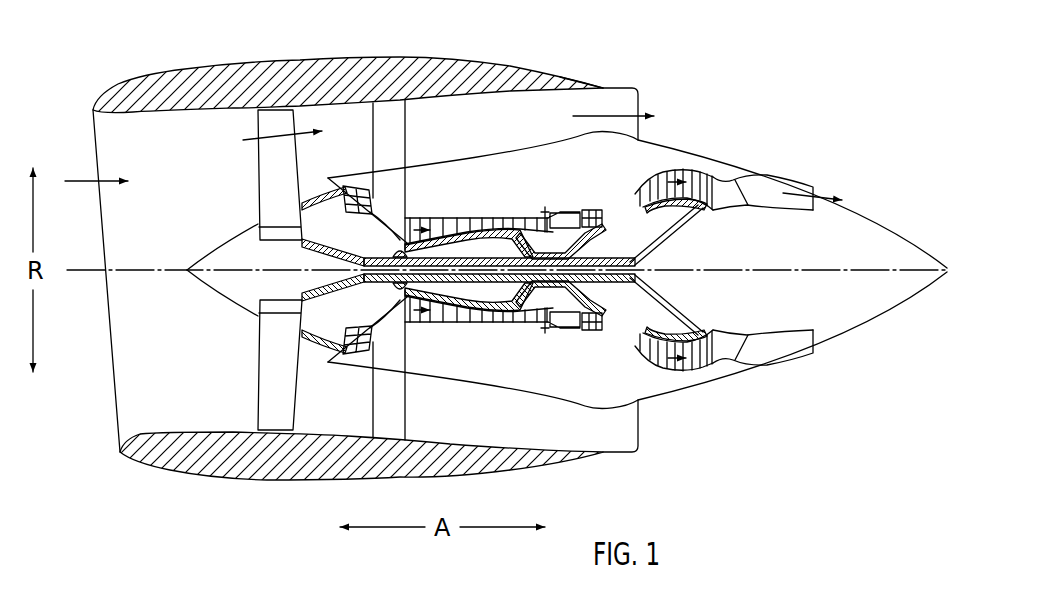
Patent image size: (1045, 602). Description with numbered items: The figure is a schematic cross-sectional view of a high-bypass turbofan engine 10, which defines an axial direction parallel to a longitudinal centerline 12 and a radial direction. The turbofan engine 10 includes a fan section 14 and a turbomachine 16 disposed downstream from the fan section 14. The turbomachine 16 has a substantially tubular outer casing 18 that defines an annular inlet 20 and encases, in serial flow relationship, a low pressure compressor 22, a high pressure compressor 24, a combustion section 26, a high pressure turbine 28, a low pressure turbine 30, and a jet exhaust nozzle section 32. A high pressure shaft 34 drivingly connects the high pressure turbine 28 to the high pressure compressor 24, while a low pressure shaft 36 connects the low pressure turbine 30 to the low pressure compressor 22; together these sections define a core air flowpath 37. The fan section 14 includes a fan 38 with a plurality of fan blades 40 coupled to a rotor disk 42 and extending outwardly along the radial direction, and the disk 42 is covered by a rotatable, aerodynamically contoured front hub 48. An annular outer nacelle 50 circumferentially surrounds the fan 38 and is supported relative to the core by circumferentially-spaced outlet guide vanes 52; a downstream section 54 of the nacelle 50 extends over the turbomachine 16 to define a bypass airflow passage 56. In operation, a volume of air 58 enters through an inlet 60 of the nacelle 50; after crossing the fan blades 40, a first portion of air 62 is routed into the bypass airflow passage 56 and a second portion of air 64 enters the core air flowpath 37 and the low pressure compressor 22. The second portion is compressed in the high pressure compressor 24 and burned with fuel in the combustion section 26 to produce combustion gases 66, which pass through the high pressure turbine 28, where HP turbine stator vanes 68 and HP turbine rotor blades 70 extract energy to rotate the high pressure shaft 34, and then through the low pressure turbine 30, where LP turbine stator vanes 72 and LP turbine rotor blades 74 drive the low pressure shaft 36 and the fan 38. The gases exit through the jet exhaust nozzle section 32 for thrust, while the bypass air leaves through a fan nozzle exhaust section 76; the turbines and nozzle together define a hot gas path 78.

The turbofan engine 10 is at (750, 58).
The longitudinal centerline 12 is at (790, 270).
The fan section 14 is at (222, 120).
The turbomachine 16 is at (499, 160).
The outer casing 18 is at (492, 388).
The annular inlet 20 is at (332, 354).
The low pressure compressor 22 is at (370, 307).
The high pressure compressor 24 is at (430, 318).
The combustion section 26 is at (557, 328).
The high pressure turbine 28 is at (667, 327).
The low pressure turbine 30 is at (700, 375).
The jet exhaust nozzle section 32 is at (748, 355).
The high pressure shaft 34 is at (598, 231).
The low pressure shaft 36 is at (652, 241).
The core air flowpath 37 is at (396, 333).
The fan 38 is at (197, 168).
The fan blades 40 is at (257, 394).
The rotor disk 42 is at (267, 237).
The front hub 48 is at (116, 297).
The outer nacelle 50 is at (267, 480).
The outlet guide vanes 52 is at (405, 122).
The downstream section of nacelle 54 is at (580, 83).
The bypass airflow passage 56 is at (540, 119).
The volume of air 58 is at (85, 180).
The inlet 60 is at (118, 427).
The first portion of air 62 is at (263, 143).
The second portion of air 64 is at (318, 186).
The combustion gases 66 is at (597, 217).
The HP turbine stator vanes 68 is at (583, 333).
The HP turbine rotor blades 70 is at (580, 316).
The LP turbine stator vanes 72 is at (633, 373).
The LP turbine rotor blades 74 is at (640, 352).
The fan nozzle exhaust section 76 is at (627, 102).
The hot gas path 78 is at (625, 190).